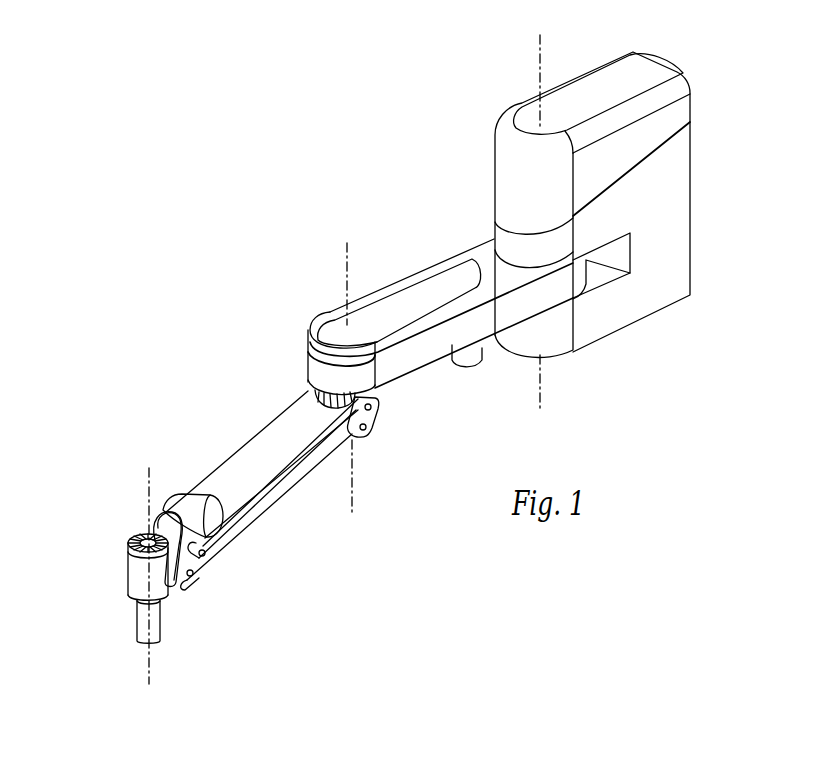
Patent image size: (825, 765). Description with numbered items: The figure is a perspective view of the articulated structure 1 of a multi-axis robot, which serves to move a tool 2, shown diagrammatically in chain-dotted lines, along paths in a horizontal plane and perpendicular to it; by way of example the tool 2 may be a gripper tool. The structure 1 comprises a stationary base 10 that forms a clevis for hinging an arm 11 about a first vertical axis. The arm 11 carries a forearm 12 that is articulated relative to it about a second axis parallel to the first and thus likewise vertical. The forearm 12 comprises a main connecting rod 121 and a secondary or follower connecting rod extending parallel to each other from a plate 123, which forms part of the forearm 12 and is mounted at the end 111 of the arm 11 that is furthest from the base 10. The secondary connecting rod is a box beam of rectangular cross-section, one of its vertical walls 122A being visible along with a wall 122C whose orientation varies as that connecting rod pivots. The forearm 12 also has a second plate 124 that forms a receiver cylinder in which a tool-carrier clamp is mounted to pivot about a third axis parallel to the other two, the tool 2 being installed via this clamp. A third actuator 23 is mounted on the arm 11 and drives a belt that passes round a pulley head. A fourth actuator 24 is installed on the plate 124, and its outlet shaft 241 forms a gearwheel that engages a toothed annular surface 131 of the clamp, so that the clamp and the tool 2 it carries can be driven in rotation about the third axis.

The structure 1 is at (286, 224).
The tool 2 is at (160, 622).
The base 10 is at (691, 273).
The arm 11 is at (485, 257).
The end of the arm 111 is at (318, 364).
The forearm 12 is at (259, 419).
The main connecting rod 121 is at (255, 522).
The vertical wall 122A is at (293, 472).
The wall 122C is at (236, 482).
The plate 123 is at (379, 422).
The second plate 124 is at (128, 586).
The toothed annular surface 131 is at (128, 538).
The third actuator 23 is at (491, 355).
The fourth actuator 24 is at (177, 497).
The outlet shaft 241 is at (162, 513).